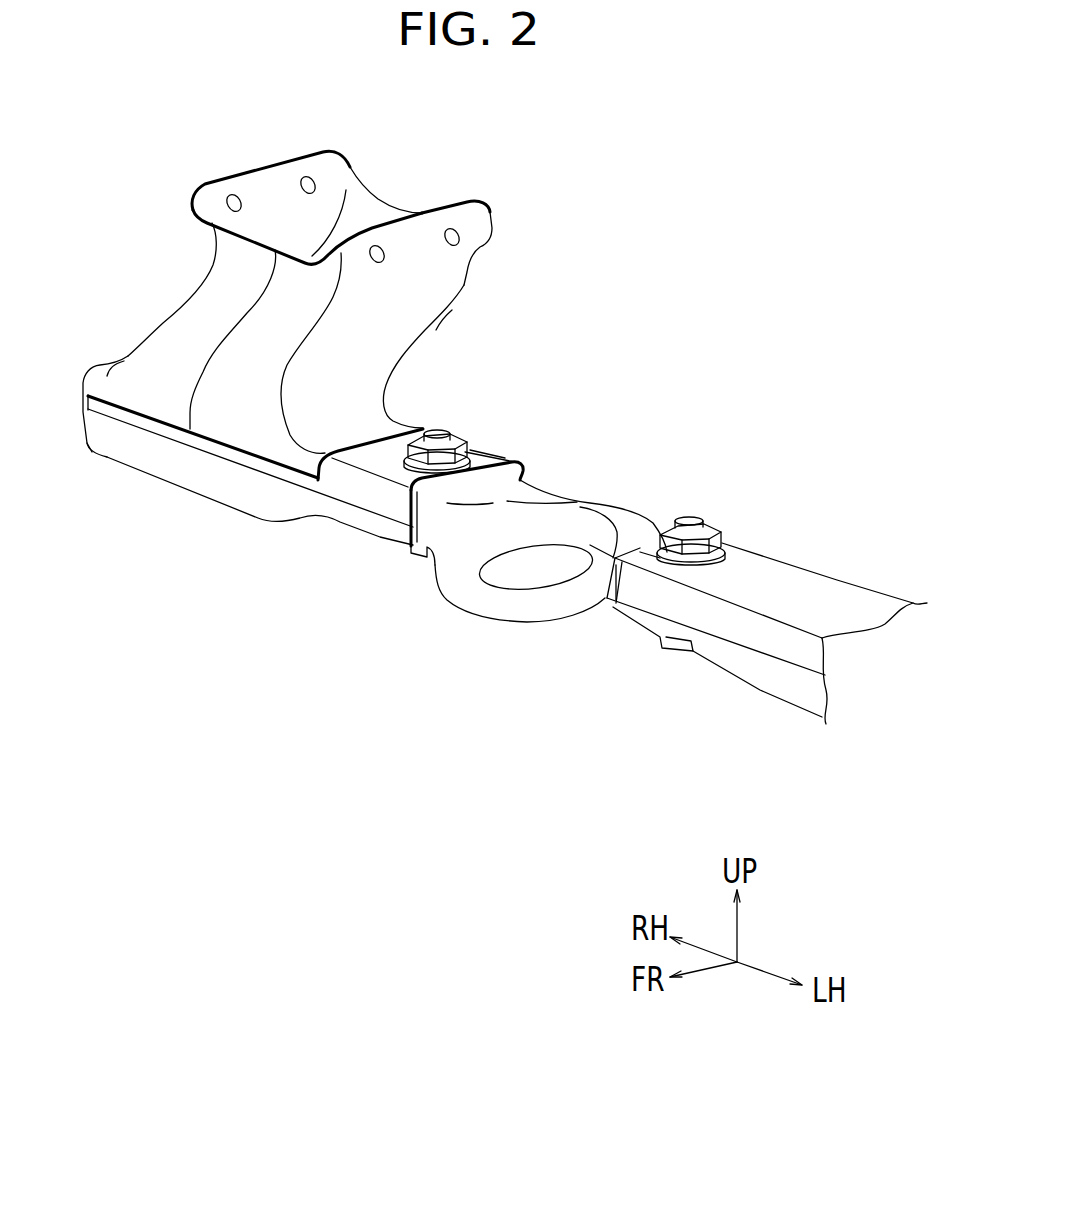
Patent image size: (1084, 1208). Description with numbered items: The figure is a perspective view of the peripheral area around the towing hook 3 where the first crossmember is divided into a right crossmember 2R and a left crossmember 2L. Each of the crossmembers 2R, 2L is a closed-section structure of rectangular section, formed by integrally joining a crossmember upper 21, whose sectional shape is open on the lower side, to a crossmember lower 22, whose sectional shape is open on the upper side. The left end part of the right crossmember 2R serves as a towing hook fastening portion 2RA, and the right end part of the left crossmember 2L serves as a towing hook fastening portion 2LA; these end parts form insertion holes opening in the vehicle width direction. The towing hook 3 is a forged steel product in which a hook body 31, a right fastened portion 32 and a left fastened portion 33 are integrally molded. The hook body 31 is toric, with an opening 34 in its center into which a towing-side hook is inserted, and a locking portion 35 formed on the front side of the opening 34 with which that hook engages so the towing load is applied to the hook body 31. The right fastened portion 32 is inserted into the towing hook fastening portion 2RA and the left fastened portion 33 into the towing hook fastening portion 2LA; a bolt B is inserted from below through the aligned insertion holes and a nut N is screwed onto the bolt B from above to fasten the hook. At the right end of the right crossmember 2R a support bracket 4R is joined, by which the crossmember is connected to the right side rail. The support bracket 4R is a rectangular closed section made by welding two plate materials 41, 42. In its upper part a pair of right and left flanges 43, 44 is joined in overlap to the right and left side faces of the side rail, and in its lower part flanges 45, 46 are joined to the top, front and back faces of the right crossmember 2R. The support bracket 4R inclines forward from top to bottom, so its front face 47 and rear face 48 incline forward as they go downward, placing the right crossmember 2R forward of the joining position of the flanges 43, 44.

The right crossmember 2R is at (345, 491).
The left crossmember 2L is at (767, 621).
The towing hook fastening portion 2RA is at (487, 447).
The towing hook fastening portion 2LA is at (643, 555).
The crossmember upper 21 is at (373, 493).
The crossmember lower 22 is at (203, 477).
The towing hook 3 is at (525, 541).
The hook body 31 is at (580, 523).
The right fastened portion 32 is at (493, 448).
The left fastened portion 33 is at (635, 595).
The opening 34 is at (527, 572).
The locking portion 35 is at (457, 590).
The support bracket 4R is at (322, 309).
The plate material 41 is at (208, 298).
The plate material 42 is at (403, 322).
The flange 43 is at (270, 183).
The flange 44 is at (425, 235).
The flange 45 is at (150, 407).
The flange 46 is at (393, 423).
The front face 47 is at (168, 335).
The rear face 48 is at (450, 310).
The bolt B is at (442, 425).
The nut N is at (457, 432).